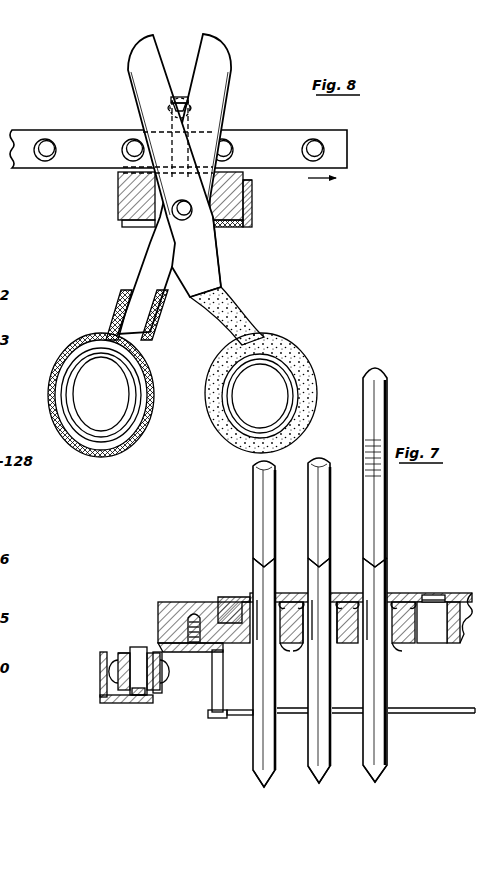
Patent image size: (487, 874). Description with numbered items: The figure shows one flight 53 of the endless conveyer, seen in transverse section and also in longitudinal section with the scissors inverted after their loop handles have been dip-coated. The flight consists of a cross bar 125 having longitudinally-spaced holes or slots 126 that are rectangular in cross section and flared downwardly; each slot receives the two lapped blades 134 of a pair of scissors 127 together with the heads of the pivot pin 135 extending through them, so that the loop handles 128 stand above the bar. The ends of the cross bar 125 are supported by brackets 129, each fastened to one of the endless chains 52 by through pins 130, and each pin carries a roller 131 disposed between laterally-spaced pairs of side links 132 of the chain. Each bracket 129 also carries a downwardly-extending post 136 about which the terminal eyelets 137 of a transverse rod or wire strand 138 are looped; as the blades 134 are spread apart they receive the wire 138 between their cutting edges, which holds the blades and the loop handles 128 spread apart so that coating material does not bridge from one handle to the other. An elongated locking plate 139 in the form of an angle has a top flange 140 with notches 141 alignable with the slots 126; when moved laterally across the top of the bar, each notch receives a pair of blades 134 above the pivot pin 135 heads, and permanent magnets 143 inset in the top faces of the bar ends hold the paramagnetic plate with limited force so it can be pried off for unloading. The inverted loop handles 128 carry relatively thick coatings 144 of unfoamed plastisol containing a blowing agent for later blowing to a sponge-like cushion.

In FIG. 8, the endless chain 52 is at (350, 142).
In FIG. 7, the endless chain 52 is at (120, 652).
In FIG. 8, the flight 53 is at (265, 190).
In FIG. 7, the flight 53 is at (411, 592).
In FIG. 7, the cross bar 125 is at (167, 602).
In FIG. 7, the holes or slots 126 is at (303, 645).
In FIG. 8, the scissors 127 is at (232, 270).
In FIG. 7, the scissors 127 is at (265, 525).
In FIG. 8, the loop handles 128 is at (143, 440).
In FIG. 7, the loop handles 128 is at (324, 464).
In FIG. 7, the bracket 129 is at (166, 654).
In FIG. 7, the through pin 130 is at (112, 672).
In FIG. 7, the roller 131 is at (146, 703).
In FIG. 7, the side links 132 is at (151, 652).
In FIG. 8, the blades 134 is at (128, 75).
In FIG. 7, the blades 134 is at (318, 781).
In FIG. 8, the pivot pin 135 is at (176, 217).
In FIG. 7, the pivot pin 135 is at (249, 592).
In FIG. 8, the post 136 is at (181, 96).
In FIG. 7, the post 136 is at (213, 720).
In FIG. 8, the terminal eyelets 137 is at (190, 105).
In FIG. 7, the terminal eyelets 137 is at (252, 718).
In FIG. 8, the rod or wire strand 138 is at (172, 107).
In FIG. 7, the rod or wire strand 138 is at (444, 715).
In FIG. 8, the locking plate 139 is at (255, 222).
In FIG. 7, the locking plate 139 is at (225, 596).
In FIG. 8, the top flange 140 is at (226, 228).
In FIG. 7, the top flange 140 is at (472, 592).
In FIG. 8, the notches 141 is at (128, 226).
In FIG. 7, the notches 141 is at (433, 595).
In FIG. 7, the permanent magnets 143 is at (191, 612).
In FIG. 8, the coatings 144 is at (118, 322).